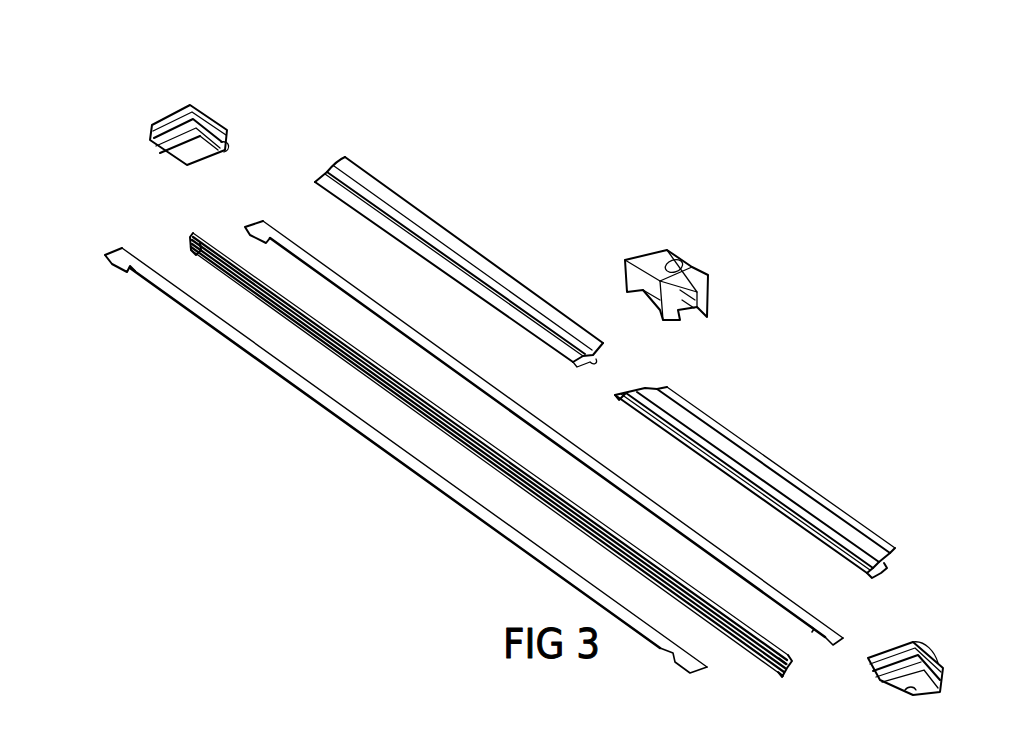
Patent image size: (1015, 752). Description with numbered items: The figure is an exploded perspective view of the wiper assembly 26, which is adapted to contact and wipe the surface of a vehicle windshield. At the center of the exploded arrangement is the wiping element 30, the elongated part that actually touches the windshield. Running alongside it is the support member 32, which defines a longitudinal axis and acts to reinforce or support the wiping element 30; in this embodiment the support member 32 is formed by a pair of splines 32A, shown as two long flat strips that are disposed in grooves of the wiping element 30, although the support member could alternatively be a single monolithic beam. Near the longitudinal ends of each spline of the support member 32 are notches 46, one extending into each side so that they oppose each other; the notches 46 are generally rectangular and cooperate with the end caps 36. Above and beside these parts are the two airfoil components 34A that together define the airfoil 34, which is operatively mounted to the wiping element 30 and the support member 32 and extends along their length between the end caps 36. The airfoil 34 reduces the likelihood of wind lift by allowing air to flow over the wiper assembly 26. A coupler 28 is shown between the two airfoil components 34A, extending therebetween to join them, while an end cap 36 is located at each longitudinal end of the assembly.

The wiper assembly 26 is at (903, 297).
The coupler 28 is at (718, 274).
The wiping element 30 is at (689, 572).
The support member 32 is at (238, 214).
The splines 32A is at (528, 411).
The airfoil 34 is at (769, 451).
The airfoil components 34A is at (341, 168).
The end caps 36 is at (183, 100).
The notches 46 is at (278, 239).